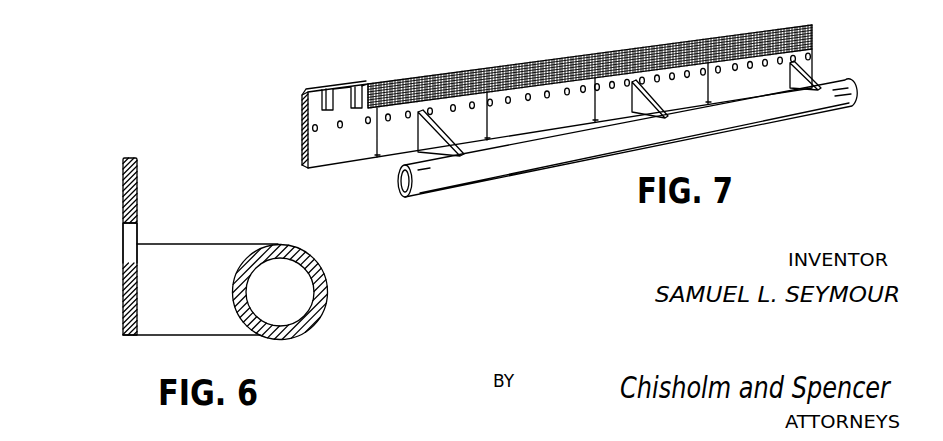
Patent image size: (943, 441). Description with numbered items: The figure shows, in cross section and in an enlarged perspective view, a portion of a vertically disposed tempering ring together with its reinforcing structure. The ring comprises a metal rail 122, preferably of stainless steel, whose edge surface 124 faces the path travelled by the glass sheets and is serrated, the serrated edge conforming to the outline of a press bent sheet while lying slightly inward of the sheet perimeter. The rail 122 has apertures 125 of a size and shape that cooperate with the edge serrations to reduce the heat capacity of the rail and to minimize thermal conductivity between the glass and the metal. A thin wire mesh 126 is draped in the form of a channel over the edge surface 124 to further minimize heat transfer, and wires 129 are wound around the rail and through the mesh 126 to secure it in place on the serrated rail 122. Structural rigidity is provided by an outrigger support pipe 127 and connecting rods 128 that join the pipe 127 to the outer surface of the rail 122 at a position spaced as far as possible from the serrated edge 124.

In FIG. 6, the metal rail 122 is at (122, 307).
In FIG. 7, the metal rail 122 is at (328, 142).
In FIG. 7, the edge surface 124 is at (352, 88).
In FIG. 6, the apertures 125 is at (130, 242).
In FIG. 7, the apertures 125 is at (338, 123).
In FIG. 6, the thin wire mesh 126 is at (124, 158).
In FIG. 7, the thin wire mesh 126 is at (448, 75).
In FIG. 6, the outrigger support pipe 127 is at (288, 247).
In FIG. 7, the outrigger support pipe 127 is at (428, 192).
In FIG. 6, the connecting rods 128 is at (188, 248).
In FIG. 7, the connecting rods 128 is at (430, 142).
In FIG. 7, the wires 129 is at (487, 120).